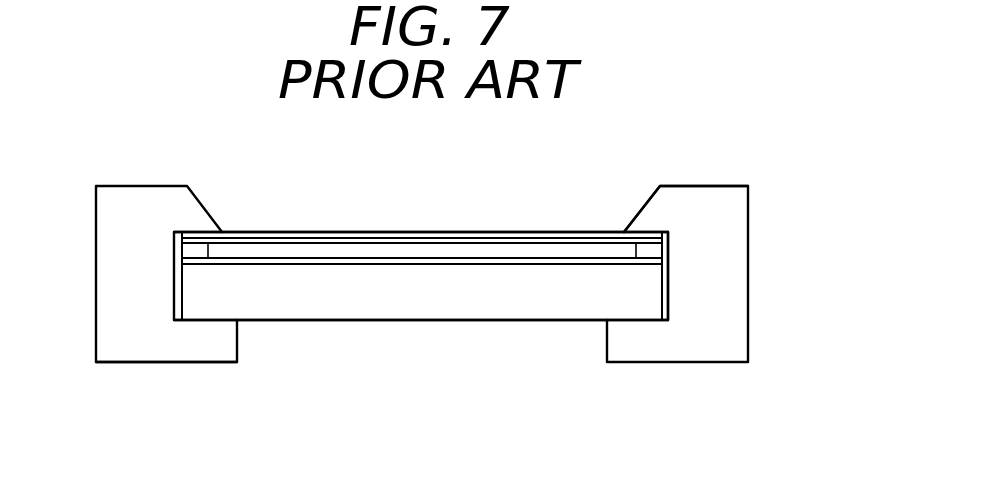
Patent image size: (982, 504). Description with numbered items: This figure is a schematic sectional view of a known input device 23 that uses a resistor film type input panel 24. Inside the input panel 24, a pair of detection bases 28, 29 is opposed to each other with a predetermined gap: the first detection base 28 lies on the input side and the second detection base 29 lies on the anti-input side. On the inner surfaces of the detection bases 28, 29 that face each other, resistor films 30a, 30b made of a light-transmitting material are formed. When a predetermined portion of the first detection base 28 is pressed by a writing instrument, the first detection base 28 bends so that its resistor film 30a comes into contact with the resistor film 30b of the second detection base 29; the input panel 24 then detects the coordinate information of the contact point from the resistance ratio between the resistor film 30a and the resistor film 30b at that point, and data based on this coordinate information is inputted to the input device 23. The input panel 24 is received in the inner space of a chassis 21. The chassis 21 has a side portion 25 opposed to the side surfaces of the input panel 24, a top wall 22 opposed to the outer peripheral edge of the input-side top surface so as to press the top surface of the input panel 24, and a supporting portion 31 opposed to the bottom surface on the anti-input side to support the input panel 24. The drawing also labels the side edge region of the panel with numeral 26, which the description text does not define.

The chassis 21 is at (717, 236).
The top wall 22 is at (686, 197).
The input device 23 is at (729, 236).
The input panel 24 is at (438, 290).
The side portion 25 is at (135, 307).
The panel side edge 26 is at (670, 303).
The first detection base 28 is at (352, 230).
The second detection base 29 is at (420, 324).
The resistor film 30a is at (255, 243).
The resistor film 30b is at (316, 260).
The supporting portion 31 is at (166, 350).